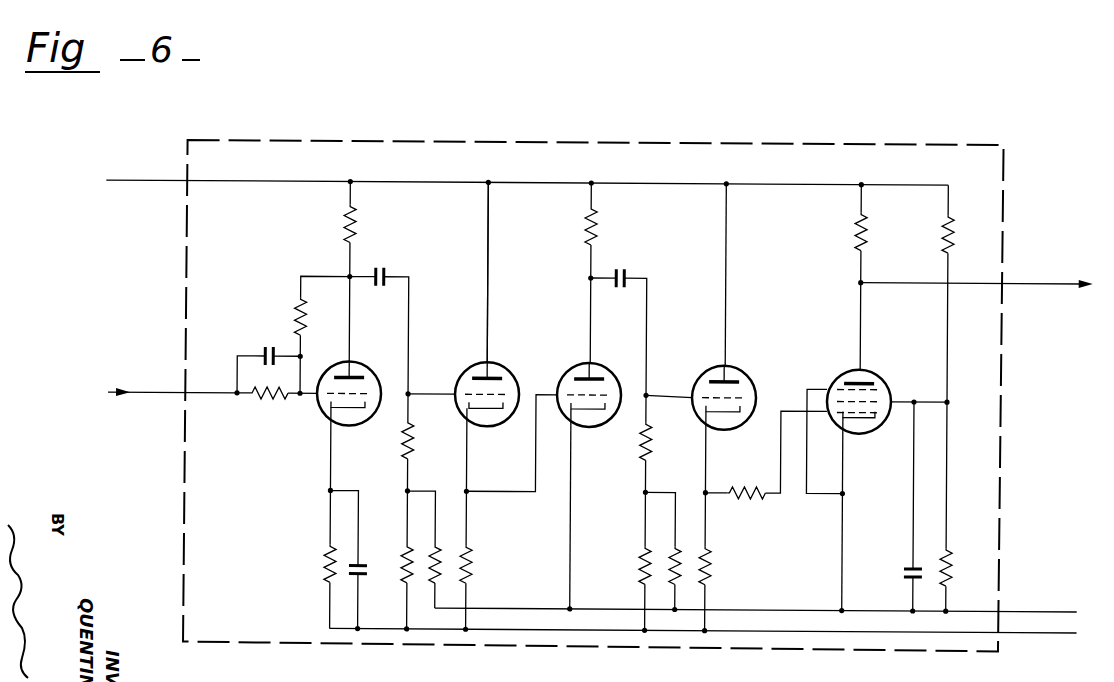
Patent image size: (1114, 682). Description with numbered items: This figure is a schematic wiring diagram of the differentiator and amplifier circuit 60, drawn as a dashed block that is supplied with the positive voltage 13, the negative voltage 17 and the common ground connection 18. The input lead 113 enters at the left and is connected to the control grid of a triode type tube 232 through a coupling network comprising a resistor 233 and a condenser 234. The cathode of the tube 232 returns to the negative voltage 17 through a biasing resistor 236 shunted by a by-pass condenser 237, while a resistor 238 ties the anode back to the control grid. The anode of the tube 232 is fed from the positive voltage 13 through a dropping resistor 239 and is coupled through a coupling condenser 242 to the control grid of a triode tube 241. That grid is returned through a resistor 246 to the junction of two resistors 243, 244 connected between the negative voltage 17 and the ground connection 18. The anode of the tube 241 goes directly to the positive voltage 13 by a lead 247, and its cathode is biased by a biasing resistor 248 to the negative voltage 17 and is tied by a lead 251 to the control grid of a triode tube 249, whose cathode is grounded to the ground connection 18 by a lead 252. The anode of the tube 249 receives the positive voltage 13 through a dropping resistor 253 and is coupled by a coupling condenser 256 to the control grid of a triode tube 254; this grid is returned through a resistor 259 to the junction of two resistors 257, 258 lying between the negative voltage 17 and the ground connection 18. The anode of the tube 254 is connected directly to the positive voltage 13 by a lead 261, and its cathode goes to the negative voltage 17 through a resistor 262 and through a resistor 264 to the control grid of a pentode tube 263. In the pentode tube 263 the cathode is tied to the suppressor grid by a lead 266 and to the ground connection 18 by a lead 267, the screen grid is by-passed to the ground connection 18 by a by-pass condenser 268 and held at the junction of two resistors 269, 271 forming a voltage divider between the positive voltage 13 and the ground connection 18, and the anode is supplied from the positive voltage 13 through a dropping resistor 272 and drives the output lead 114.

The differentiator and amplifier circuit 60 is at (617, 143).
The positive voltage 13 is at (170, 182).
The negative voltage 17 is at (521, 633).
The common ground connection 18 is at (491, 608).
The lead 113 is at (172, 394).
The lead 114 is at (1066, 283).
The triode type tube 232 is at (402, 350).
The resistor 233 is at (268, 401).
The condenser 234 is at (270, 347).
The biasing resistor 236 is at (327, 565).
The by-pass condenser 237 is at (364, 569).
The resistor 238 is at (297, 312).
The dropping resistor 239 is at (358, 225).
The triode tube 241 is at (535, 351).
The coupling condenser 242 is at (384, 270).
The resistor 243 is at (402, 548).
The resistor 244 is at (437, 547).
The resistor 246 is at (402, 456).
The lead 247 is at (488, 283).
The biasing resistor 248 is at (473, 572).
The triode tube 249 is at (636, 351).
The lead 251 is at (536, 462).
The lead 252 is at (571, 490).
The dropping resistor 253 is at (600, 230).
The triode tube 254 is at (789, 362).
The coupling condenser 256 is at (623, 268).
The resistor 257 is at (641, 563).
The resistor 258 is at (678, 548).
The resistor 259 is at (642, 456).
The lead 261 is at (727, 252).
The resistor 262 is at (710, 560).
The pentode tube 263 is at (924, 363).
The resistor 264 is at (761, 470).
The lead 266 is at (813, 498).
The lead 267 is at (842, 547).
The by-pass condenser 268 is at (903, 566).
The resistor 269 is at (945, 248).
The resistor 271 is at (949, 562).
The dropping resistor 272 is at (855, 230).